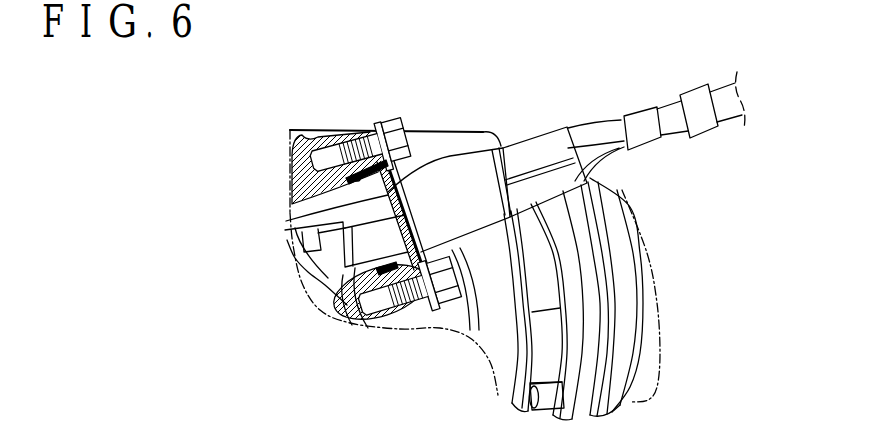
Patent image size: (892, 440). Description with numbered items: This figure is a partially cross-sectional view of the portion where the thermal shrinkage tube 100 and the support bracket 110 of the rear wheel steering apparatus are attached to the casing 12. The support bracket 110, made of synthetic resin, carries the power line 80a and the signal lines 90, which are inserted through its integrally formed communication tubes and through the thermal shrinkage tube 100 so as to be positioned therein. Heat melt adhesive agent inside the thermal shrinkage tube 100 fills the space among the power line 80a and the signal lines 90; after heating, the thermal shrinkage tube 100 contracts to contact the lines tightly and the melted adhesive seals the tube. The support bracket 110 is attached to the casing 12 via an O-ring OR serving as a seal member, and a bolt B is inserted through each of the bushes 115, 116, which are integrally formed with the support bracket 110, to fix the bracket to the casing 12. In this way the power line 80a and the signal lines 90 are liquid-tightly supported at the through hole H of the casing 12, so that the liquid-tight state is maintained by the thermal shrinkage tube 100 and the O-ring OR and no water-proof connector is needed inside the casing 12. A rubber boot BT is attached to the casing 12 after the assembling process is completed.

The bolt B is at (387, 117).
The support bracket 110 is at (395, 160).
The bush 115 is at (355, 130).
The thermal shrinkage tube 100 is at (468, 170).
The O-ring OR is at (354, 178).
The power line 80a is at (307, 222).
The signal lines 90 is at (317, 280).
The through hole H is at (338, 320).
The casing 12 is at (407, 330).
The bush 116 is at (417, 315).
The rubber boot BT is at (627, 280).